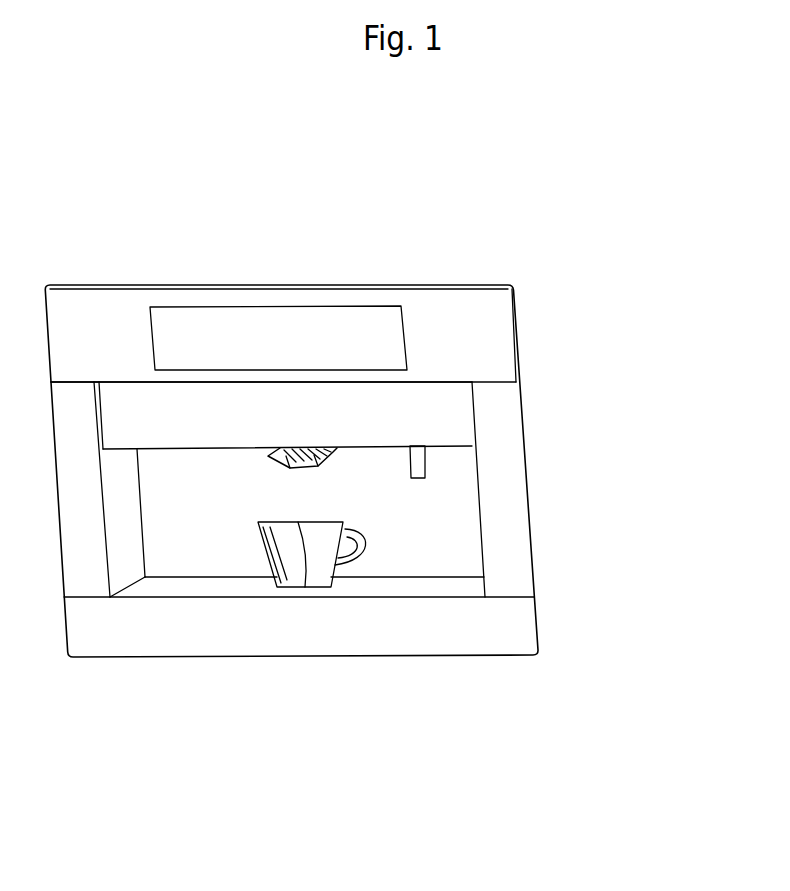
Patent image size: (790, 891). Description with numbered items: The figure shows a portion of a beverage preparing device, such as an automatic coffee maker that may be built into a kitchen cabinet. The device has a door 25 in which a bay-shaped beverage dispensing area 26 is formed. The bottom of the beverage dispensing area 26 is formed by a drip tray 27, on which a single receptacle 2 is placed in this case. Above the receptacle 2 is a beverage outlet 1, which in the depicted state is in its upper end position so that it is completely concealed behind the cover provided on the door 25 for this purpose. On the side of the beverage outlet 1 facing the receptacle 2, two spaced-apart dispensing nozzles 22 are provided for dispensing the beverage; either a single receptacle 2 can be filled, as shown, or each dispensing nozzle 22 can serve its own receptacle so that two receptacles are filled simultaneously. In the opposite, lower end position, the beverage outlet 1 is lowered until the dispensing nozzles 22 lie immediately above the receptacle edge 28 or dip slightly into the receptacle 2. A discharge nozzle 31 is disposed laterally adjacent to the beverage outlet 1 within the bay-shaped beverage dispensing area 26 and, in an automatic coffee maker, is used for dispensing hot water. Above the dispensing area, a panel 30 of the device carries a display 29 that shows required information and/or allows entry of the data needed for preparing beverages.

The beverage outlet 1 is at (333, 452).
The receptacle 2 is at (318, 570).
The dispensing nozzles 22 is at (313, 468).
The door 25 is at (527, 397).
The beverage dispensing area 26 is at (165, 520).
The drip tray 27 is at (178, 588).
The receptacle edge 28 is at (305, 577).
The display 29 is at (202, 327).
The panel 30 is at (455, 325).
The discharge nozzle 31 is at (425, 472).